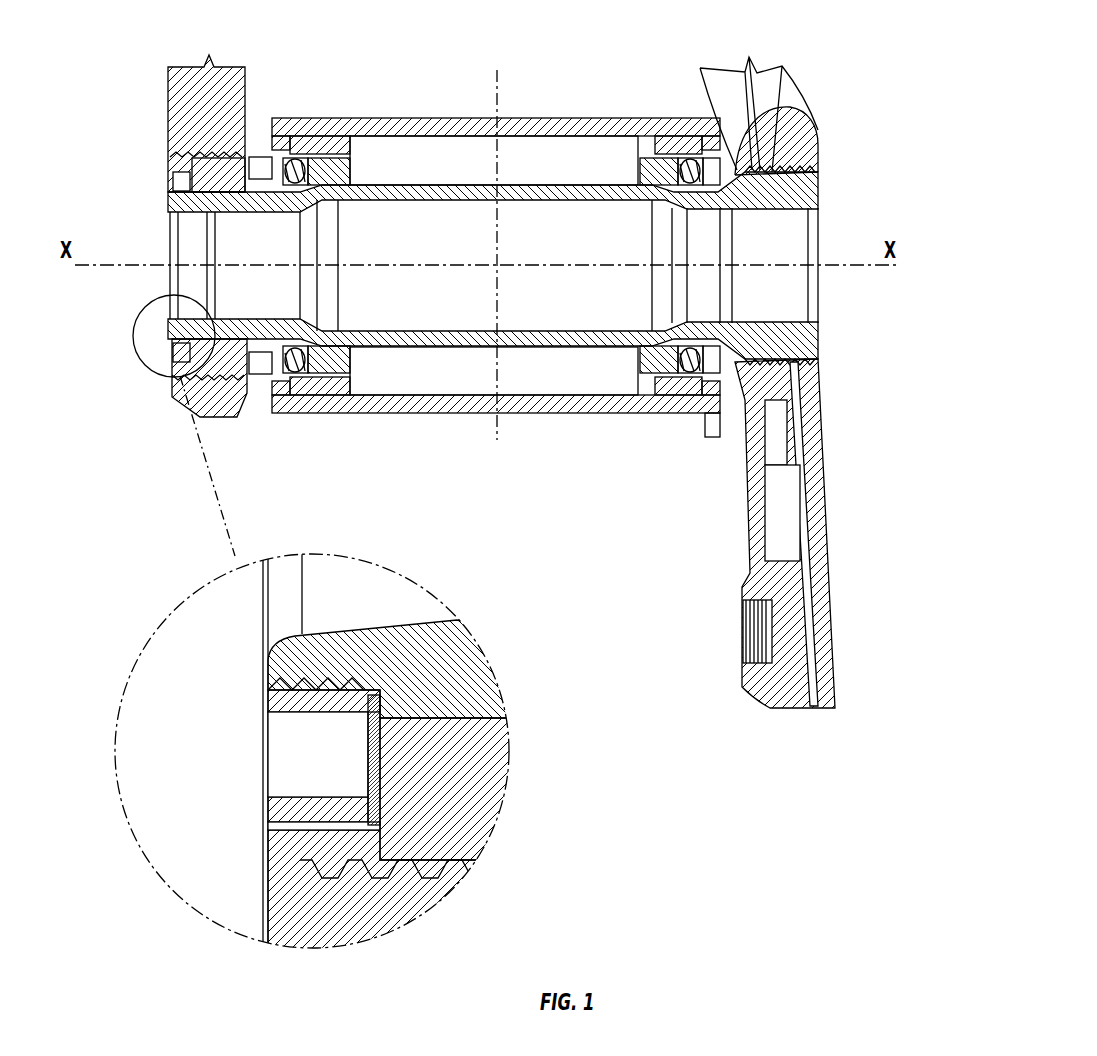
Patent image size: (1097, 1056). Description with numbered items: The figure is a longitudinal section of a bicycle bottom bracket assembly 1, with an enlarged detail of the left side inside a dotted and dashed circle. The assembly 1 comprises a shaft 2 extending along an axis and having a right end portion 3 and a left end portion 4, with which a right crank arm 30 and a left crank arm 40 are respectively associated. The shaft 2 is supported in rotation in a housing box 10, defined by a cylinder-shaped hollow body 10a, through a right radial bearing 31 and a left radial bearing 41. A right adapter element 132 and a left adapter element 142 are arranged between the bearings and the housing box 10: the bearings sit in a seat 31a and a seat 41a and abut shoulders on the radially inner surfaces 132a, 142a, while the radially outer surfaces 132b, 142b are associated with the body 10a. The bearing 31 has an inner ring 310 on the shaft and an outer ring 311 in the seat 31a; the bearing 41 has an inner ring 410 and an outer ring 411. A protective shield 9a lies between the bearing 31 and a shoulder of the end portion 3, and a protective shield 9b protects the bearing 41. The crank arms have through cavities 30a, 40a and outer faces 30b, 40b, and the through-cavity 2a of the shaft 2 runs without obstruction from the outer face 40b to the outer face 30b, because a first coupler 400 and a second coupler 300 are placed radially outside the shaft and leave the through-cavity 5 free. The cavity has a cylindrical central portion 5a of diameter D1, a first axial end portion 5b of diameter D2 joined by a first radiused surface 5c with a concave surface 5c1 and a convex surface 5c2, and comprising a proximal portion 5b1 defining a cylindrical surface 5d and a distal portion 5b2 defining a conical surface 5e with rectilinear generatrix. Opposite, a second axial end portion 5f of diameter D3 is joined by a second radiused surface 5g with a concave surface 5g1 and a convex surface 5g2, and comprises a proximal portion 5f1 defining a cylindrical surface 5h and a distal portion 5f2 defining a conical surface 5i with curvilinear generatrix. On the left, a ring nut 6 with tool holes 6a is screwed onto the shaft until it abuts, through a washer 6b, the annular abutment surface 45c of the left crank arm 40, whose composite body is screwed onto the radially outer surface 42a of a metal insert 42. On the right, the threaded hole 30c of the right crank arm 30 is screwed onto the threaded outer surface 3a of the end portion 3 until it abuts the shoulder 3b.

The bicycle bottom bracket assembly 1 is at (425, 156).
The shaft 2 is at (536, 183).
The longitudinal through cavity 2a is at (550, 198).
The right end portion 3 is at (756, 172).
The threaded outer surface 3a is at (750, 420).
The shoulder 3b is at (786, 172).
The left end portion 4 is at (210, 178).
The through-cavity 5 is at (493, 265).
The substantially cylindrical central portion 5a is at (562, 200).
The first axial end portion 5b is at (280, 316).
The proximal portion 5b1 is at (250, 192).
The distal portion 5b2 is at (196, 214).
The first radiused surface 5c is at (332, 201).
The concave surface 5c1 is at (322, 338).
The convex surface 5c2 is at (316, 330).
The cylindrical surface 5d is at (236, 336).
The conical-shaped surface 5e is at (186, 336).
The second axial end portion 5f is at (704, 213).
The proximal portion 5f1 is at (742, 185).
The distal portion 5f2 is at (778, 168).
The second radiused surface 5g is at (672, 209).
The concave surface 5g1 is at (655, 335).
The convex surface 5g2 is at (668, 328).
The cylindrical surface 5h is at (730, 210).
The conical-shaped surface 5i is at (772, 350).
The ring nut 6 is at (166, 358).
The holes 6a is at (298, 750).
The washer 6b is at (372, 786).
The protective shield 9a is at (770, 358).
The protective shield 9b is at (262, 378).
The housing box 10 is at (470, 116).
The hollow body 10a is at (442, 412).
The right crank arm 30 is at (830, 492).
The longitudinal through cavity 30a is at (806, 134).
The outer face 30b is at (826, 184).
The threaded hole 30c is at (830, 342).
The right radial bearing 31 is at (700, 156).
The seat 31a is at (696, 146).
The left crank arm 40 is at (166, 108).
The longitudinal through cavity 40a is at (196, 168).
The outer face 40b is at (184, 156).
The left radial bearing 41 is at (296, 148).
The seat 41a is at (322, 134).
The metal insert 42 is at (212, 380).
The radially outer surface 42a is at (212, 416).
The substantially annular abutment surface 45c is at (384, 748).
The right adapter element 132 is at (658, 148).
The radially inner surface 132a is at (652, 408).
The radially outer surface 132b is at (682, 402).
The left adapter element 142 is at (350, 388).
The radially inner surface 142a is at (362, 352).
The radially outer surface 142b is at (318, 398).
The second coupler 300 is at (830, 352).
The inner ring 310 is at (642, 350).
The outer ring 311 is at (703, 420).
The first coupler 400 is at (166, 198).
The inner ring 410 is at (410, 350).
The outer ring 411 is at (264, 396).
The diameter D1 is at (400, 328).
The diameter D2 is at (258, 316).
The diameter D3 is at (640, 209).